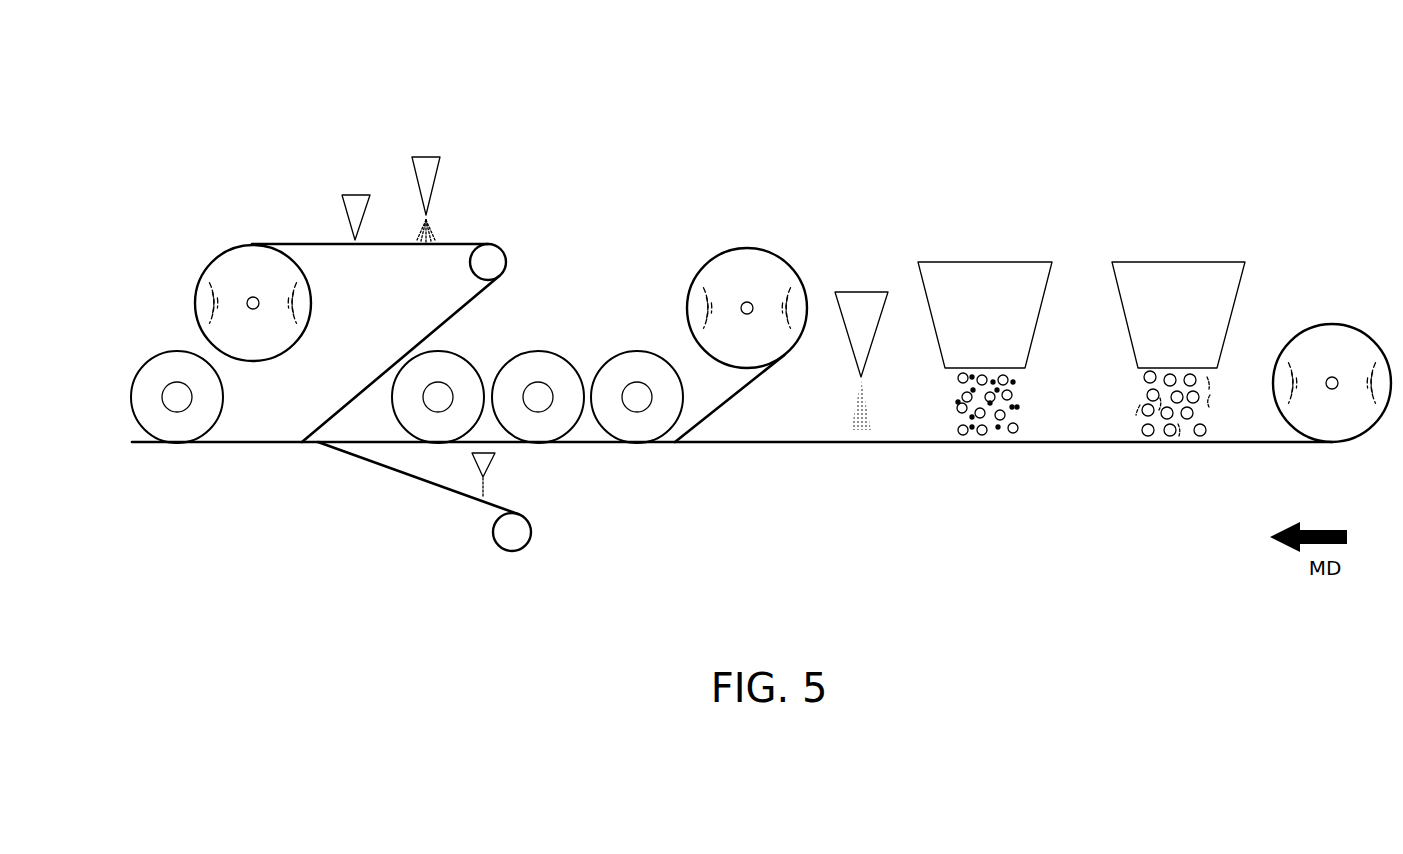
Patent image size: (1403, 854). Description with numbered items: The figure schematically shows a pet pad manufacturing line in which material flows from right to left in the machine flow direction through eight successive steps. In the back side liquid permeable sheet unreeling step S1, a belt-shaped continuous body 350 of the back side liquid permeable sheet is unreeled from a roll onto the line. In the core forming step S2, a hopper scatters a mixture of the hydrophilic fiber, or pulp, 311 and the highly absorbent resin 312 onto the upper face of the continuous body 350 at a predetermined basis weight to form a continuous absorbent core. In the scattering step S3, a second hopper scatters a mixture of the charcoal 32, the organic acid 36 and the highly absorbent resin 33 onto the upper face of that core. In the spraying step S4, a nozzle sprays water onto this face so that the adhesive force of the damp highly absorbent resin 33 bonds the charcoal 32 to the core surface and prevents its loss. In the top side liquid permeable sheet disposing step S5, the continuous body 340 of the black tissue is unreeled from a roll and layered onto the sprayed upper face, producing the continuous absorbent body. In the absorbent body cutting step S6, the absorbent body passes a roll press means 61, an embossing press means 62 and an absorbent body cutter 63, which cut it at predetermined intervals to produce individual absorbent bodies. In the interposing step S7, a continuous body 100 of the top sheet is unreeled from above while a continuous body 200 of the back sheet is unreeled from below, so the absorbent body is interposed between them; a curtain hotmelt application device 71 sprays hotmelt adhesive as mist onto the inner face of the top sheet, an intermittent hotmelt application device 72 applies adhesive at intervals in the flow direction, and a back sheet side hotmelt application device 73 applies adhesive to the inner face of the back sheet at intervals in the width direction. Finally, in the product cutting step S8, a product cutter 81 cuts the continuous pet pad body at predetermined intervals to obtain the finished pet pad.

The continuous body of the top sheet 100 is at (308, 243).
The continuous body of the back sheet 200 is at (418, 480).
The product cutter 81 is at (157, 355).
The absorbent body cutter 63 is at (460, 357).
The embossing press means 62 is at (562, 358).
The roll press means 61 is at (652, 353).
The curtain hotmelt application device 71 is at (427, 157).
The intermittent hotmelt application device 72 is at (357, 195).
The back sheet side hotmelt application device 73 is at (495, 458).
The continuous body of the black tissue 340 is at (745, 386).
The continuous body of the back side liquid permeable sheet 350 is at (1365, 334).
The organic acid 36 is at (987, 403).
The highly absorbent resin 33 is at (1008, 398).
The charcoal 32 is at (1017, 409).
The highly absorbent resin 312 is at (1148, 379).
The hydrophilic fiber (pulp) 311 is at (1208, 404).
The back side liquid permeable sheet unreeling step S1 is at (1338, 335).
The core forming step S2 is at (1178, 302).
The scattering step S3 is at (987, 303).
The spraying step S4 is at (859, 268).
The top side liquid permeable sheet disposing step S5 is at (741, 293).
The absorbent body cutting step S6 is at (537, 348).
The interposing step S7 is at (390, 141).
The product cutting step S8 is at (172, 306).